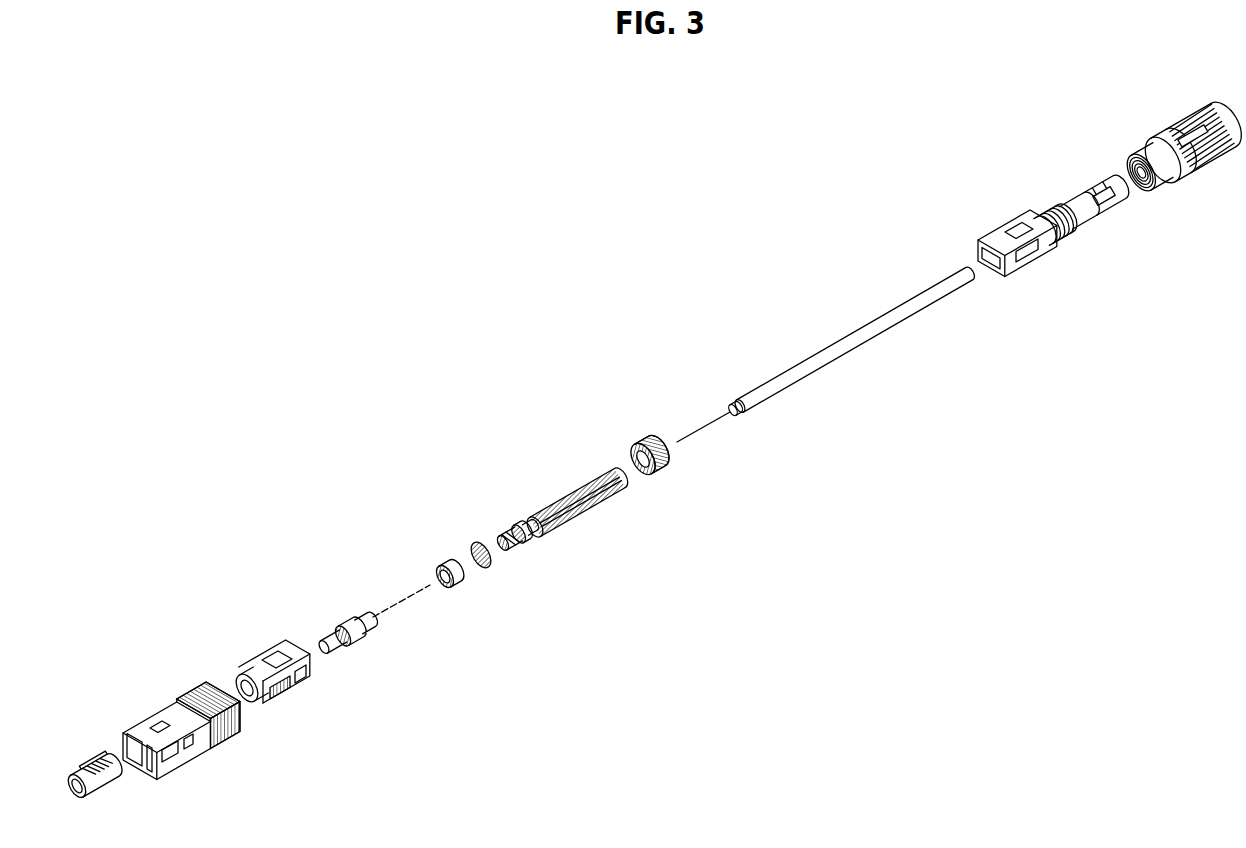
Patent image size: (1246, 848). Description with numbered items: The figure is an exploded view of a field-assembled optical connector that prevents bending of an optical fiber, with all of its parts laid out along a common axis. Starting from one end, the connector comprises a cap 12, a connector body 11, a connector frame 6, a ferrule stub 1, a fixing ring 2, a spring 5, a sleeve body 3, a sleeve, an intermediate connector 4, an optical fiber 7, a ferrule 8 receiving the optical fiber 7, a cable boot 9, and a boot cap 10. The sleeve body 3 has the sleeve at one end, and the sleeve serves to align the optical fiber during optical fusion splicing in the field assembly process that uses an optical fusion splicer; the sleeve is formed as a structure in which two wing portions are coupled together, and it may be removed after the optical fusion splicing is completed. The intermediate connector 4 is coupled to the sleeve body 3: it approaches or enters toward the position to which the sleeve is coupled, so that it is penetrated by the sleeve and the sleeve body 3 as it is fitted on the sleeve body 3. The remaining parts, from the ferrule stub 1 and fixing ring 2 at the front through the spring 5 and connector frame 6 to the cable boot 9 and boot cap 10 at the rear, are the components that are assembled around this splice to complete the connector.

The ferrule stub 1 is at (333, 630).
The fixing ring 2 is at (453, 560).
The sleeve body 3 is at (515, 520).
The intermediate connector 4 is at (647, 437).
The spring 5 is at (485, 580).
The connector frame 6 is at (280, 640).
The optical fiber 7 is at (700, 423).
The ferrule 8 is at (833, 348).
The cable boot 9 is at (1025, 262).
The boot cap 10 is at (1163, 197).
The connector body 11 is at (138, 722).
The cap 12 is at (88, 767).
The element sleeve is at (565, 487).